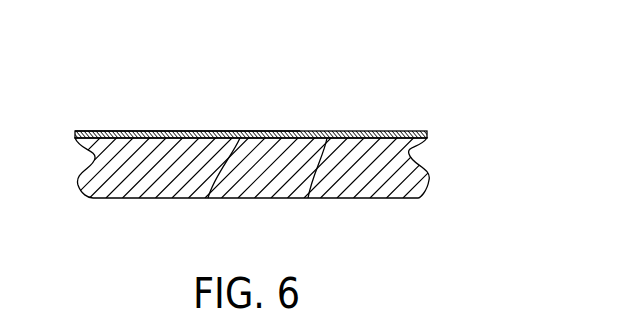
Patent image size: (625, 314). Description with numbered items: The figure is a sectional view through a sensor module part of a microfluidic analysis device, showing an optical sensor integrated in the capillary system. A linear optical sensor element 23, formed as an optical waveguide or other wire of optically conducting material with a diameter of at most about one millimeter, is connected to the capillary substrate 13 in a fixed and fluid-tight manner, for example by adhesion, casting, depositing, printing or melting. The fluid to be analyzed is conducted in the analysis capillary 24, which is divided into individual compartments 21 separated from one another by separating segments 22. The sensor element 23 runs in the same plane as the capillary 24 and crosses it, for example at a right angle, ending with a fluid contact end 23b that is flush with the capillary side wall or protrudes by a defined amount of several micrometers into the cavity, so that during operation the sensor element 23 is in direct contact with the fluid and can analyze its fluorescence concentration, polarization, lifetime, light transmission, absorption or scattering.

The capillary substrate 13 is at (405, 164).
The compartment 21 is at (308, 198).
The separating segment 22 is at (350, 131).
The optical sensor element 23 is at (251, 131).
The fluid contact end 23b is at (208, 198).
The analysis capillary 24 is at (144, 131).